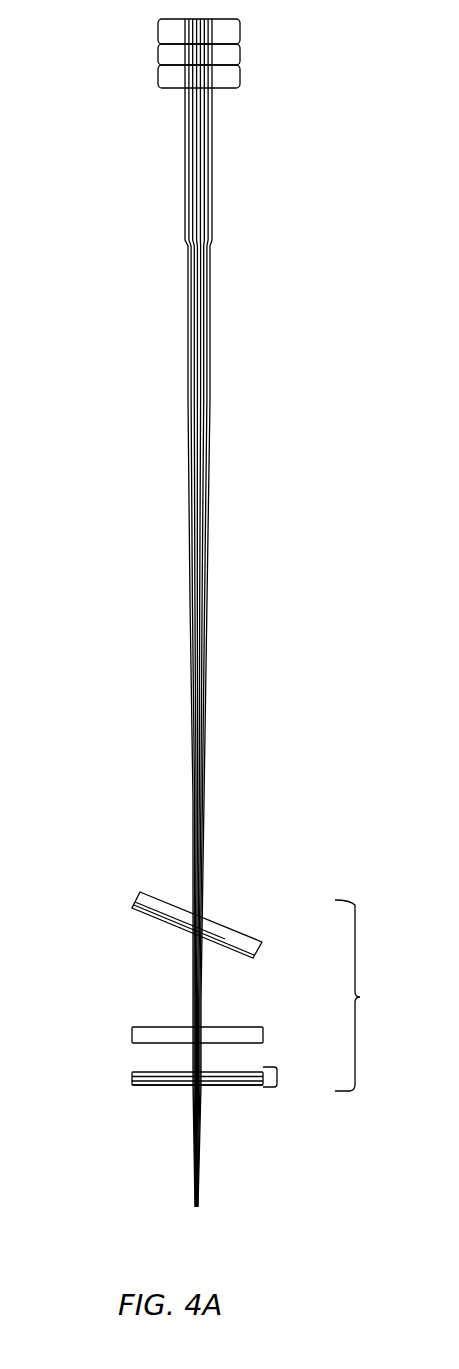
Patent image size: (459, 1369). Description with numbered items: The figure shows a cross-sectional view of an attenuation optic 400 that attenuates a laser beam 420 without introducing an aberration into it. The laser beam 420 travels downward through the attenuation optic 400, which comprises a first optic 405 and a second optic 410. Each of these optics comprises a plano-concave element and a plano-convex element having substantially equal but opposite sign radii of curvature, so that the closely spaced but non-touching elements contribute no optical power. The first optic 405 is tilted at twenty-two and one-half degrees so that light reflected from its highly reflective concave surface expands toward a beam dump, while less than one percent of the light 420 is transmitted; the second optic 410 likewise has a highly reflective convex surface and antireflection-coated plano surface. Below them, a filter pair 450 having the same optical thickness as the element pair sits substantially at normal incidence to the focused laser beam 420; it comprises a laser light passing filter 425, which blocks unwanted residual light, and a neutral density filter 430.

The attenuation optic 400 is at (362, 997).
The first optic 405 is at (131, 897).
The second optic 410 is at (129, 1033).
The laser beam 420 is at (184, 172).
The laser light passing filter 425 is at (129, 1077).
The neutral density filter 430 is at (246, 1090).
The filter pair 450 is at (279, 1077).